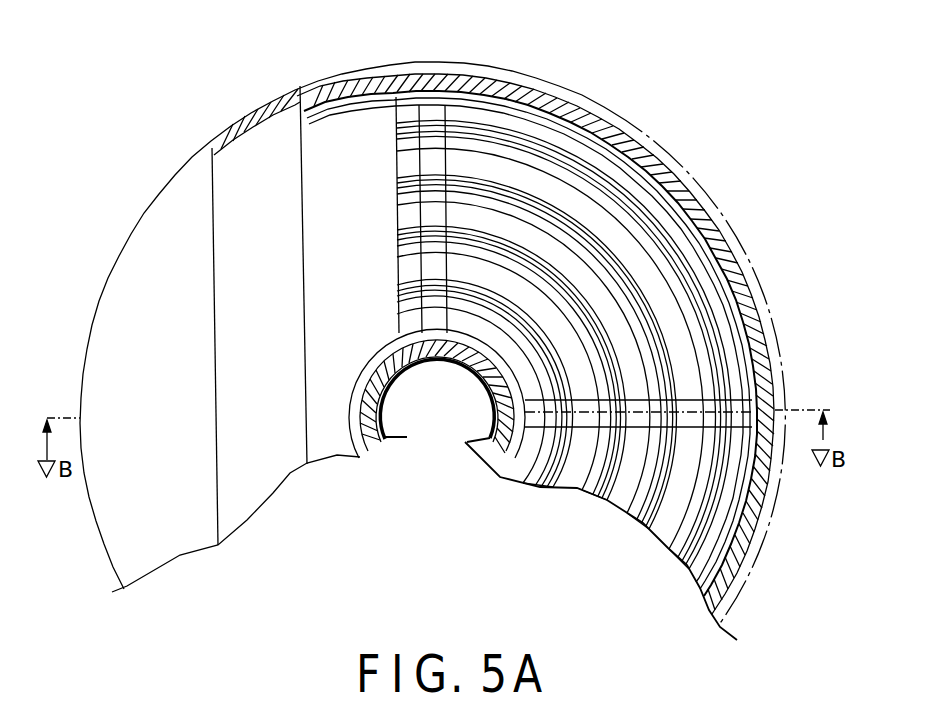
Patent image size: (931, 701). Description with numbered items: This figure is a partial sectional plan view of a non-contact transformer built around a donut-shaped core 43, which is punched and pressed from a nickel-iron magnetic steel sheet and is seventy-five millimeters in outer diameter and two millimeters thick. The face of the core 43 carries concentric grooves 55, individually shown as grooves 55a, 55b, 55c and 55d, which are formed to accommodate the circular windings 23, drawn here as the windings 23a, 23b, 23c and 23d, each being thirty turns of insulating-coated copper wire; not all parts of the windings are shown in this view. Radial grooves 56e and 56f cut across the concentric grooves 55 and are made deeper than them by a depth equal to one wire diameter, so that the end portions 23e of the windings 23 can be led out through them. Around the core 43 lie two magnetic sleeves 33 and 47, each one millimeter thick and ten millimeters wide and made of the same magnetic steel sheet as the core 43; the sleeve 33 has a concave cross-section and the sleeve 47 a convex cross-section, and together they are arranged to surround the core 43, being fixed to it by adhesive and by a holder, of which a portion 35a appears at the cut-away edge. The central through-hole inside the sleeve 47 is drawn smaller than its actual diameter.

The circular windings 23 is at (583, 284).
The winding 23a is at (462, 290).
The winding 23b is at (497, 247).
The winding 23c is at (553, 225).
The winding 23d is at (617, 202).
The end portions of the windings 23e is at (752, 380).
The magnetic sleeve 33 is at (245, 307).
The layer edge portion 35a is at (201, 518).
The donut-shaped core 43 is at (337, 438).
The magnetic sleeve 47 is at (367, 455).
The concentric grooves 55 is at (593, 541).
The concentric groove 55a is at (540, 483).
The concentric groove 55b is at (593, 477).
The concentric groove 55c is at (643, 513).
The concentric groove 55d is at (645, 567).
The radial groove 56e is at (692, 402).
The radial groove 56f is at (433, 108).